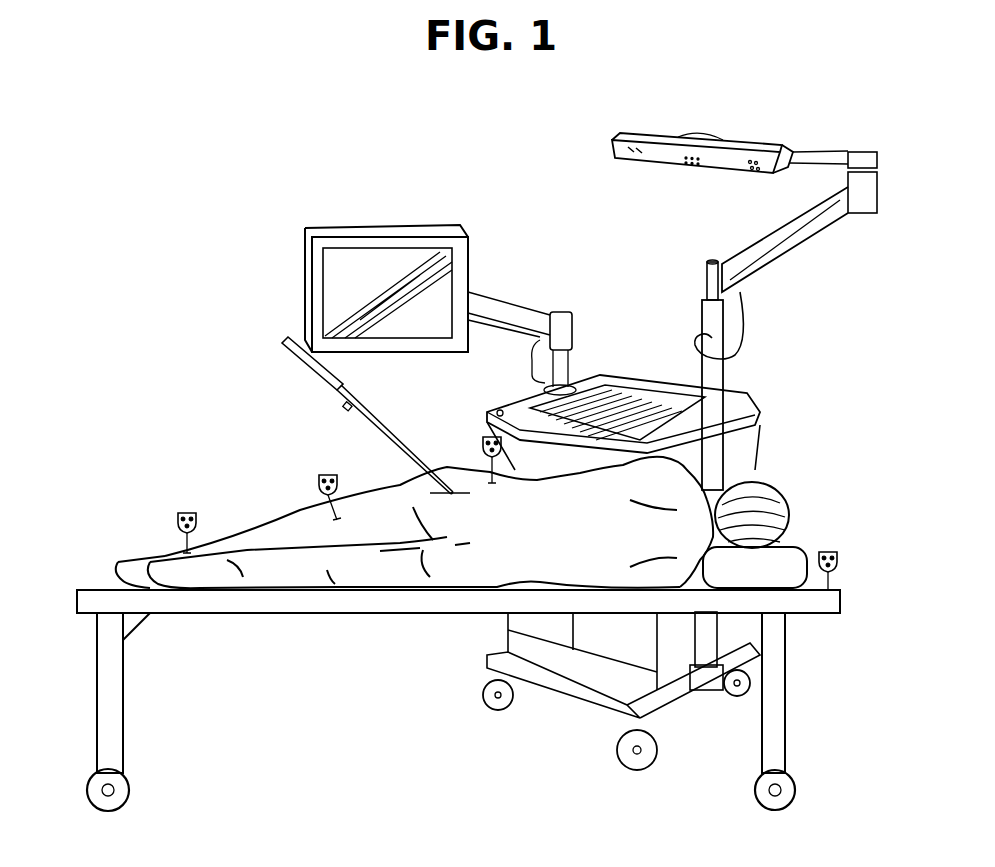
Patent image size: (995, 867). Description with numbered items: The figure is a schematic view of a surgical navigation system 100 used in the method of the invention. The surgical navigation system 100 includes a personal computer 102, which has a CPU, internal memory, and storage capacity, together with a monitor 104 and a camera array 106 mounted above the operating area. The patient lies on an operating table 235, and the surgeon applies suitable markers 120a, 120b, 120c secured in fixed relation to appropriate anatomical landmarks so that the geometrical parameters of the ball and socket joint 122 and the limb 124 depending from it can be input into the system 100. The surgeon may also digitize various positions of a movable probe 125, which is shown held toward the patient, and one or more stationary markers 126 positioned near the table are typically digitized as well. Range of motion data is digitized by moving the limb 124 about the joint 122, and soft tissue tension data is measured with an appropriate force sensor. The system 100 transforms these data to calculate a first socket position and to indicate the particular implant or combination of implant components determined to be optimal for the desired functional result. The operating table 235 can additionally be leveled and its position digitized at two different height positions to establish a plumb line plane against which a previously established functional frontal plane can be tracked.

The surgical navigation system 100 is at (792, 400).
The personal computer 102 is at (735, 383).
The monitor 104 is at (373, 257).
The camera array 106 is at (742, 142).
The marker 120a is at (483, 438).
The marker 120b is at (326, 474).
The marker 120c is at (185, 512).
The ball and socket joint 122 is at (413, 495).
The limb 124 is at (463, 487).
The movable probe 125 is at (370, 420).
The stationary marker 126 is at (830, 550).
The operating table 235 is at (810, 603).